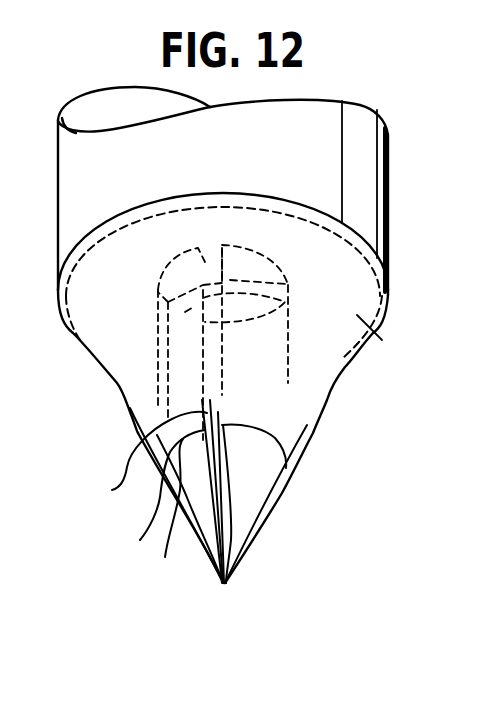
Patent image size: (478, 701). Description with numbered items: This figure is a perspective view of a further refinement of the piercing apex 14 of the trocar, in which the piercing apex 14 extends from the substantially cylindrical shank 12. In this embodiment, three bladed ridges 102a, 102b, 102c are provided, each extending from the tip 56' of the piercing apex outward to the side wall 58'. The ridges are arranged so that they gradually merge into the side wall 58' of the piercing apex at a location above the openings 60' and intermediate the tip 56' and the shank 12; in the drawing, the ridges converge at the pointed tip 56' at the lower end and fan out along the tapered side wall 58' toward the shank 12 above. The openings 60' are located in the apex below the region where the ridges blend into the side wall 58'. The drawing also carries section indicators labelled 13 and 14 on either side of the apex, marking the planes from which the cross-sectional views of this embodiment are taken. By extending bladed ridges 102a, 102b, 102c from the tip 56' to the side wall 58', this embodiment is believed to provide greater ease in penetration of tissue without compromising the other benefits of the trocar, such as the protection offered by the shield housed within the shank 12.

The shank 12 is at (380, 193).
The side wall 58' is at (246, 436).
The bladed ridge 102a is at (150, 495).
The bladed ridge 102b is at (304, 451).
The bladed ridge 102c is at (142, 494).
The openings 60' is at (188, 497).
The tip 56' is at (205, 624).
The section line 13- 13 is at (73, 448).
The piercing apex 14 is at (41, 509).